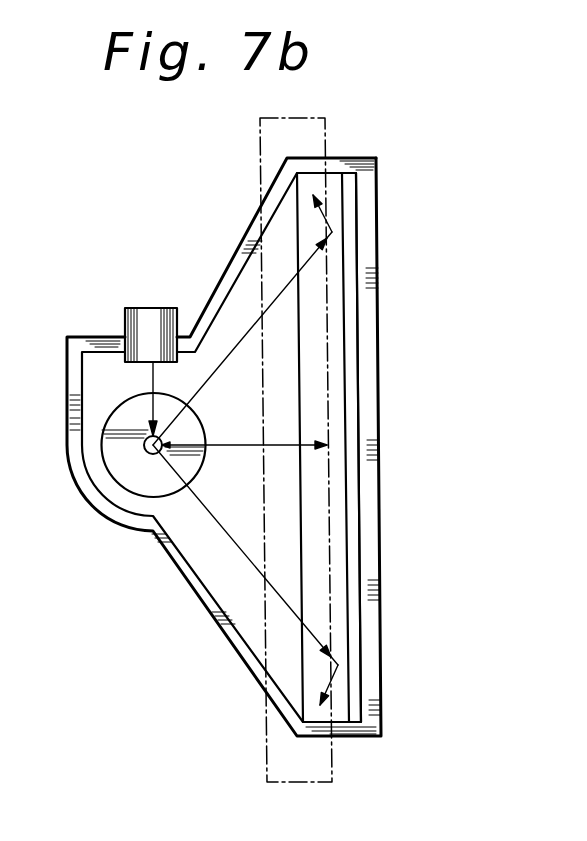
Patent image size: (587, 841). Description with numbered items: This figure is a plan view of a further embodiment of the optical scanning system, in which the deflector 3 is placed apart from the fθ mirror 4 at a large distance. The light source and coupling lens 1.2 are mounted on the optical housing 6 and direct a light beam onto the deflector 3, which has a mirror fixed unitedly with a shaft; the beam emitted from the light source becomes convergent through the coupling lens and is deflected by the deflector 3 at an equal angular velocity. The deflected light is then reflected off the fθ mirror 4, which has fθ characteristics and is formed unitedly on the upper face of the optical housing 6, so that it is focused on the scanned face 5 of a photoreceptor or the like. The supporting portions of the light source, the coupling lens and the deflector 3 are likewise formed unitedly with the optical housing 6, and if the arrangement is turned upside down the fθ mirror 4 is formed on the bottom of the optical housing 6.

The light source and coupling lens 1.2 is at (152, 306).
The deflector 3 is at (130, 475).
The fθ mirror 4 is at (335, 205).
The scanned face 5 is at (259, 140).
The optical housing 6 is at (220, 588).